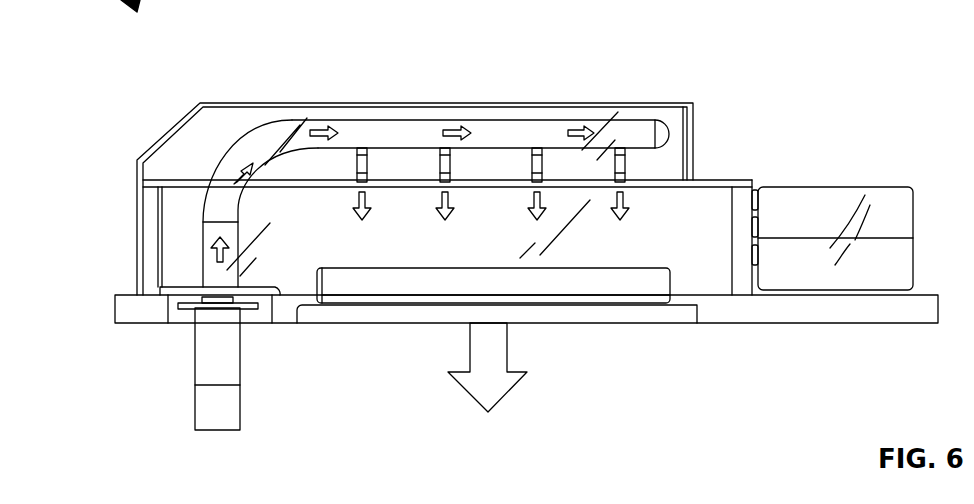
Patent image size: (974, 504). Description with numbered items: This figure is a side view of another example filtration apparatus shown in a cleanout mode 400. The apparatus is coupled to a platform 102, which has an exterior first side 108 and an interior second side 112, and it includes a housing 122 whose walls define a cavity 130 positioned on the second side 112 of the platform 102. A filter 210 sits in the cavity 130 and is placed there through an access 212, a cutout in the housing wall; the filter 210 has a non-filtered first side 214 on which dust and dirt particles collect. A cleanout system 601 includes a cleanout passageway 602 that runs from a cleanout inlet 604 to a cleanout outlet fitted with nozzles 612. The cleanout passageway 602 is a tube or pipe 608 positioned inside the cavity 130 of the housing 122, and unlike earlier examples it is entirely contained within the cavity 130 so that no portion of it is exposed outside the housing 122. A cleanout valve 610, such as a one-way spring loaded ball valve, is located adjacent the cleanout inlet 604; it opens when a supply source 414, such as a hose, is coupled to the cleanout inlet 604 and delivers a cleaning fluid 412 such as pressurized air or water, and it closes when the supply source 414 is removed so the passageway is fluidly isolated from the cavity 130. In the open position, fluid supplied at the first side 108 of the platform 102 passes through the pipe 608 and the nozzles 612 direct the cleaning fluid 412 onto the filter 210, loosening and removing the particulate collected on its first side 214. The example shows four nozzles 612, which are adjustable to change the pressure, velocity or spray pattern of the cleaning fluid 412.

The platform 102 is at (843, 312).
The first side 108 is at (328, 430).
The second side 112 is at (128, 285).
The housing 122 is at (166, 134).
The cavity 130 is at (707, 242).
The filter 210 is at (632, 293).
The access 212 is at (387, 304).
The first side 214 is at (370, 267).
The cleanout mode 400 is at (470, 58).
The cleaning fluid 412 is at (316, 132).
The supply source 414 is at (194, 366).
The cleanout system 601 is at (235, 118).
The cleanout passageway 602 is at (405, 128).
The cleanout inlet 604 is at (200, 301).
The pipe 608 is at (664, 124).
The cleanout valve 610 is at (207, 265).
The nozzles 612 is at (450, 168).